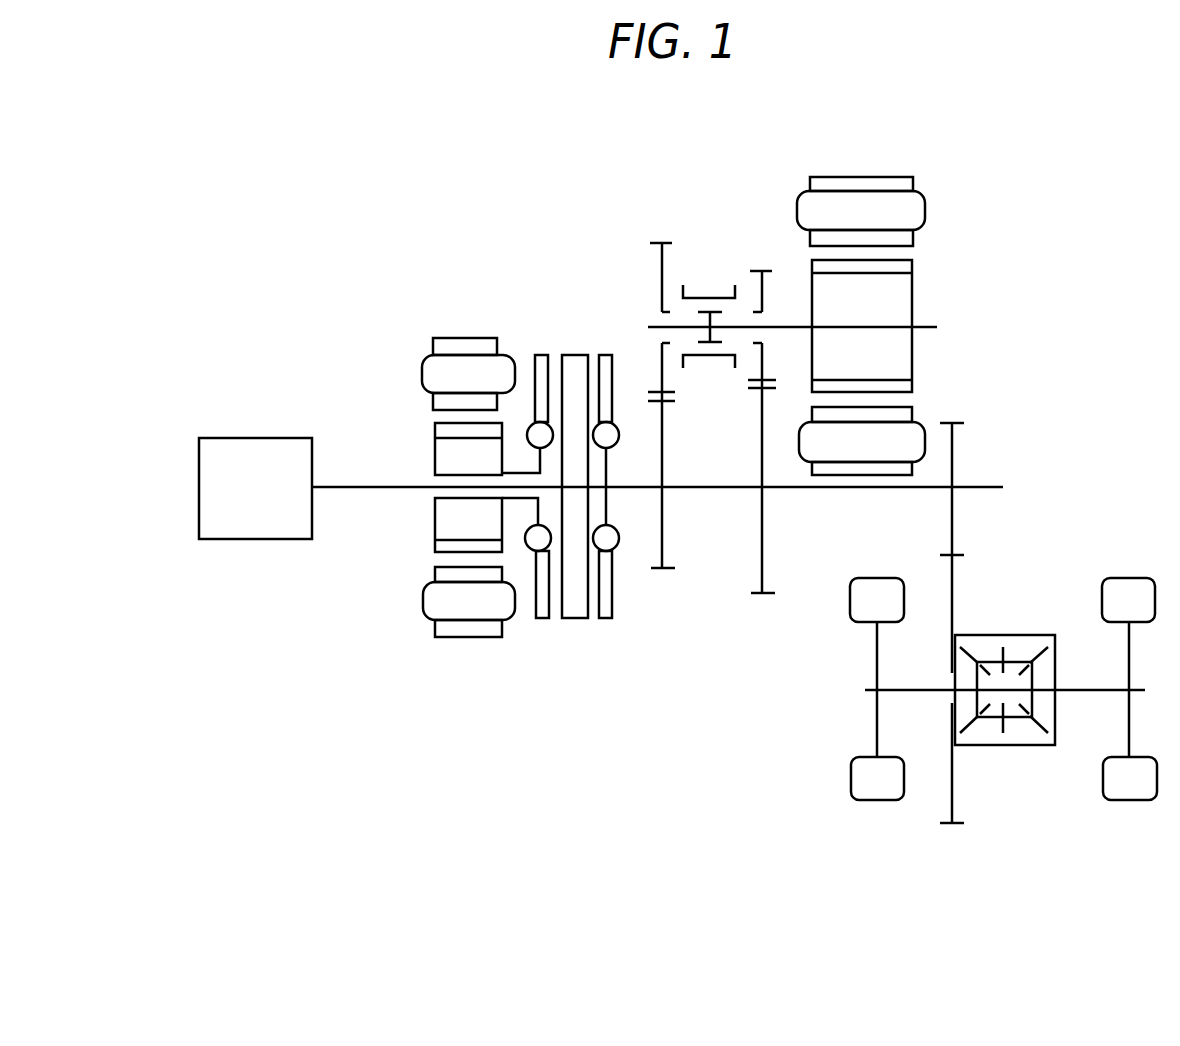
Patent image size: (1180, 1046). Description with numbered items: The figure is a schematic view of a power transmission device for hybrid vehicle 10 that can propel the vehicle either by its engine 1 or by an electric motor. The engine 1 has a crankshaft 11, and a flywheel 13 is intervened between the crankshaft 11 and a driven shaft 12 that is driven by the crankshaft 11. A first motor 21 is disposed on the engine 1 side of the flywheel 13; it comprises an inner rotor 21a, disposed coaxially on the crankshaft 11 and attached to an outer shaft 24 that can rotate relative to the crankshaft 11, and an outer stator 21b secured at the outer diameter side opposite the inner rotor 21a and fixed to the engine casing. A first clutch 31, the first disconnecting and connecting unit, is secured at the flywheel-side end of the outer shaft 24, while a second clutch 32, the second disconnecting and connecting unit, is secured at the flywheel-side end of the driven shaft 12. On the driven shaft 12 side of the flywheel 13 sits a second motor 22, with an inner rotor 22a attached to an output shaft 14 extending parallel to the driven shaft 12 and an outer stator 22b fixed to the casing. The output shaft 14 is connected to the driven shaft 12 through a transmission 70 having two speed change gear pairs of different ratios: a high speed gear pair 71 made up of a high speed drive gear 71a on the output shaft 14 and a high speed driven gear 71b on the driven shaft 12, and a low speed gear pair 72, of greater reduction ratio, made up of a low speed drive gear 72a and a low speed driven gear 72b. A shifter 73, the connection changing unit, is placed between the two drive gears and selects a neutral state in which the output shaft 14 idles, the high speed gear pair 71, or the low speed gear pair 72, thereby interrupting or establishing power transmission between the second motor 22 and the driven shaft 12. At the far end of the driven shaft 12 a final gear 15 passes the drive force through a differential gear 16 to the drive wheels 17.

The engine 1 is at (218, 437).
The power transmission device for hybrid vehicle 10 is at (960, 168).
The crankshaft 11 is at (333, 487).
The driven shaft 12 is at (822, 490).
The flywheel 13 is at (572, 352).
The output shaft 14 is at (784, 325).
The final gear 15 is at (978, 450).
The differential gear 16 is at (1010, 631).
The drive wheel 17 is at (879, 787).
The first motor 21 is at (435, 434).
The inner rotor 21a is at (436, 460).
The outer stator 21b is at (435, 373).
The second motor 22 is at (914, 284).
The inner rotor 22a is at (905, 355).
The outer stator 22b is at (905, 212).
The outer shaft 24 is at (517, 498).
The first clutch 31 is at (540, 350).
The second clutch 32 is at (603, 350).
The transmission 70 is at (707, 390).
The high speed gear pair 71 is at (648, 392).
The high speed drive gear 71a is at (660, 390).
The high speed driven gear 71b is at (665, 570).
The low speed gear pair 72 is at (777, 422).
The low speed drive gear 72a is at (765, 378).
The low speed driven gear 72b is at (765, 595).
The shifter 73 is at (716, 287).